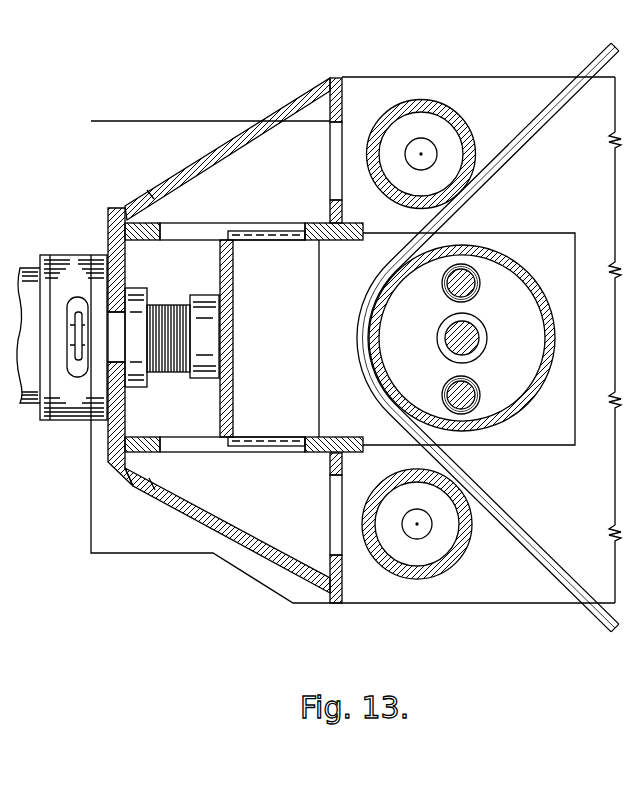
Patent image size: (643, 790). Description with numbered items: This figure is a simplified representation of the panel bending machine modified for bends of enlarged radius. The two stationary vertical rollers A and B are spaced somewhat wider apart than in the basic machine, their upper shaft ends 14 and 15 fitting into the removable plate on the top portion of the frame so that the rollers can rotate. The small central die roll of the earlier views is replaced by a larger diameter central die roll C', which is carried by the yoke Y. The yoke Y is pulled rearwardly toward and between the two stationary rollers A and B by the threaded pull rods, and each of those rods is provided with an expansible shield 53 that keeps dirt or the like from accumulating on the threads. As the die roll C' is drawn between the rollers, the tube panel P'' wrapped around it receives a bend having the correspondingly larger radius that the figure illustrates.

The expansible shield 53 is at (165, 305).
The upper shaft end 15 is at (410, 146).
The upper shaft end 14 is at (405, 531).
The roller B is at (462, 124).
The roller A is at (457, 560).
The larger diameter central die roll C' is at (466, 340).
The tube panel P'' is at (488, 337).
The yoke Y is at (292, 412).